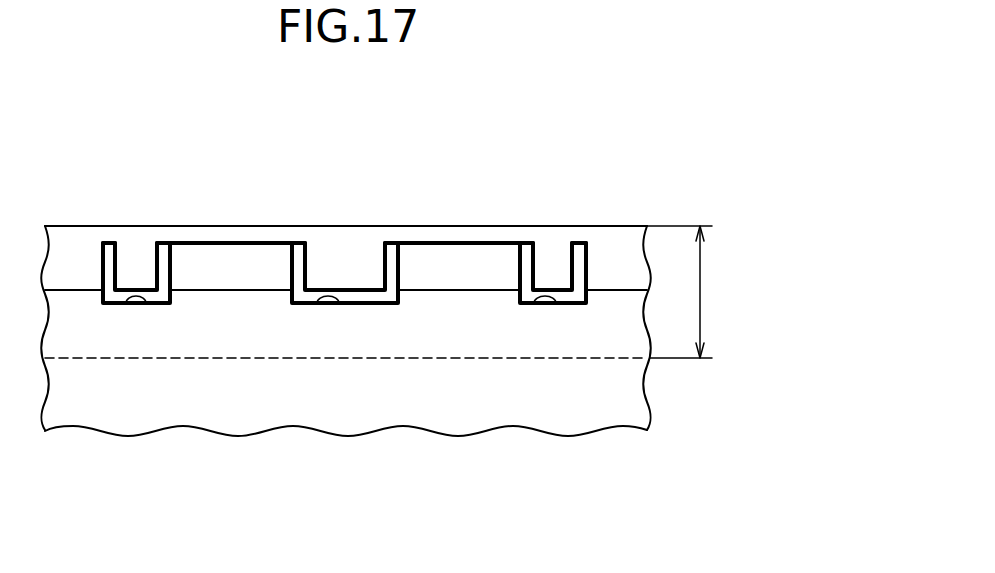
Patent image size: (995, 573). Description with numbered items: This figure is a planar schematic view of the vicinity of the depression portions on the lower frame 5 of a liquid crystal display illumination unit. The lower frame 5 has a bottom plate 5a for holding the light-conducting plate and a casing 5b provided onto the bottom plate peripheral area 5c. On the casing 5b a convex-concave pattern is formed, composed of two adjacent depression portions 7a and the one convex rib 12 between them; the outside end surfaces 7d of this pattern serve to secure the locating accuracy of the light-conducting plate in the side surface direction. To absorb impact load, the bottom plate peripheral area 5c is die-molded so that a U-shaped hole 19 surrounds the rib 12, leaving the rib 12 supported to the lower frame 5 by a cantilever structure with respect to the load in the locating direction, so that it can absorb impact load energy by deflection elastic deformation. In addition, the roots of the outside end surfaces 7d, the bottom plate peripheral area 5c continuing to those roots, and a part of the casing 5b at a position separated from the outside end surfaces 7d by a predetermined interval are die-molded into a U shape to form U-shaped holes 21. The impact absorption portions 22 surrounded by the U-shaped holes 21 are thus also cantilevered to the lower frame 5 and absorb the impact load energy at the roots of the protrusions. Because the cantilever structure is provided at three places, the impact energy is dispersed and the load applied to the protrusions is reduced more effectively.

The lower frame 5 is at (208, 107).
The bottom plate 5a is at (630, 393).
The casing 5b is at (617, 243).
The bottom plate peripheral area 5c is at (681, 292).
The depression portion 7a is at (232, 277).
The outside end surface 7d is at (160, 262).
The convex rib 12 is at (344, 268).
The U-shaped hole 19 is at (332, 297).
The U-shaped hole 21 is at (128, 300).
The impact absorption portion 22 is at (136, 267).